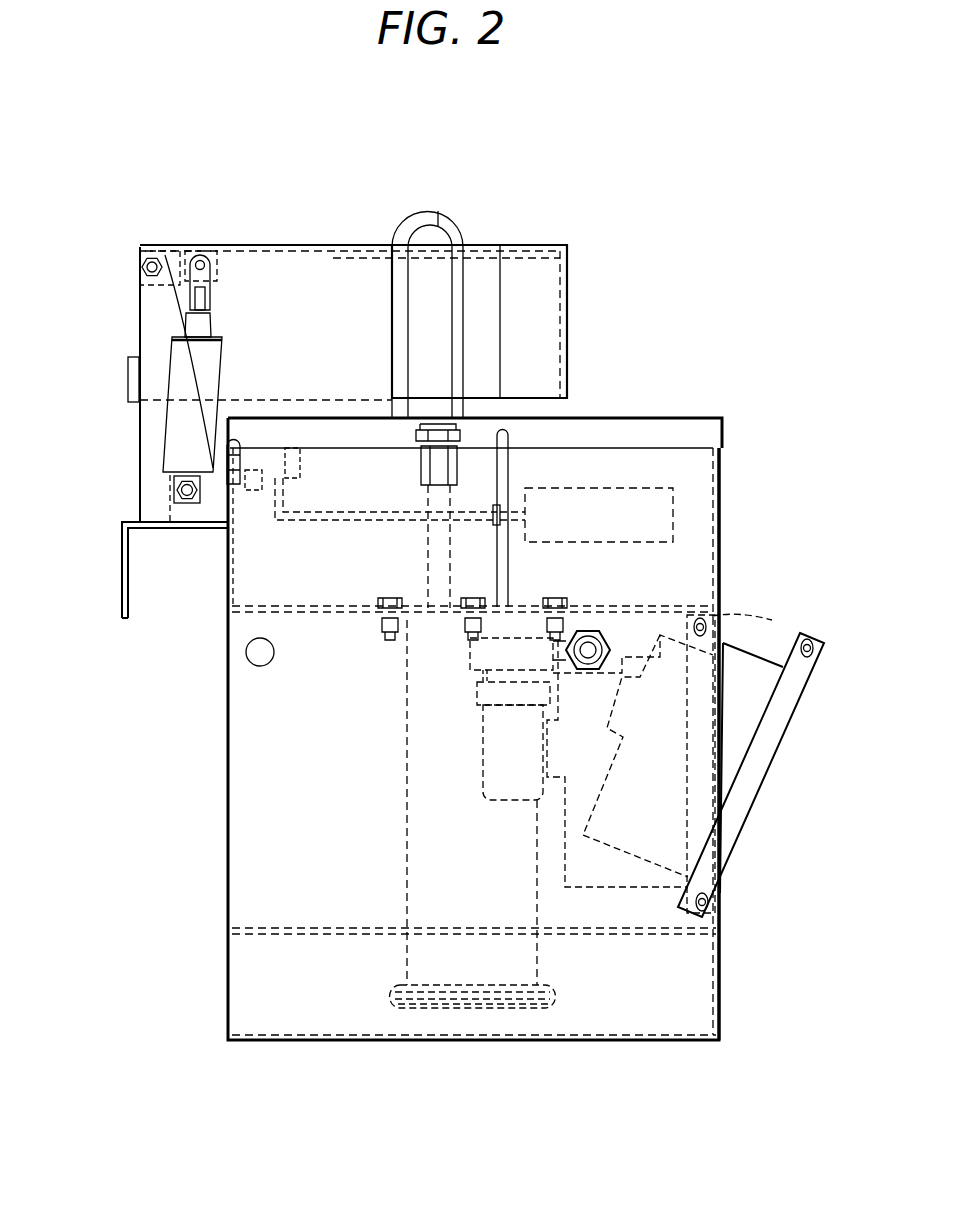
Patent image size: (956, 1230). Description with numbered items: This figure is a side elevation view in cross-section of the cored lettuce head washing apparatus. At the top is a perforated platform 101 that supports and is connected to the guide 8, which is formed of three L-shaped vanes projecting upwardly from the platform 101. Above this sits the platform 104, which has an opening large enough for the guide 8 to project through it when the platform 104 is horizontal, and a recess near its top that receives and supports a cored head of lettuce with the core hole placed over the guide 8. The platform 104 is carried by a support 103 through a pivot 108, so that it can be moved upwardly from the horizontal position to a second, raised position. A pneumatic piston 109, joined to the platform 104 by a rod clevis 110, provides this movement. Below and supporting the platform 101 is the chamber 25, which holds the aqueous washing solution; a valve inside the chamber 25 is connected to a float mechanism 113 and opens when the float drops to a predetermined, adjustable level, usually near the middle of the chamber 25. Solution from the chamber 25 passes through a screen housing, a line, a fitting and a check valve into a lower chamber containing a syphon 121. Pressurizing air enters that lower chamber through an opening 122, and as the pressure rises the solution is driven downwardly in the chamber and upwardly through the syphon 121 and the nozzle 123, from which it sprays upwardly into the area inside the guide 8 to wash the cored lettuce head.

The guide 8 is at (428, 211).
The chamber 25 is at (720, 538).
The perforated platform 101 is at (680, 414).
The support 103 is at (138, 458).
The platform 104 is at (567, 243).
The pivot 108 is at (150, 258).
The pneumatic piston 109 is at (167, 363).
The rod clevis 110 is at (215, 295).
The float mechanism 113 is at (675, 513).
The syphon 121 is at (428, 543).
The opening 122 is at (470, 660).
The nozzle 123 is at (463, 414).